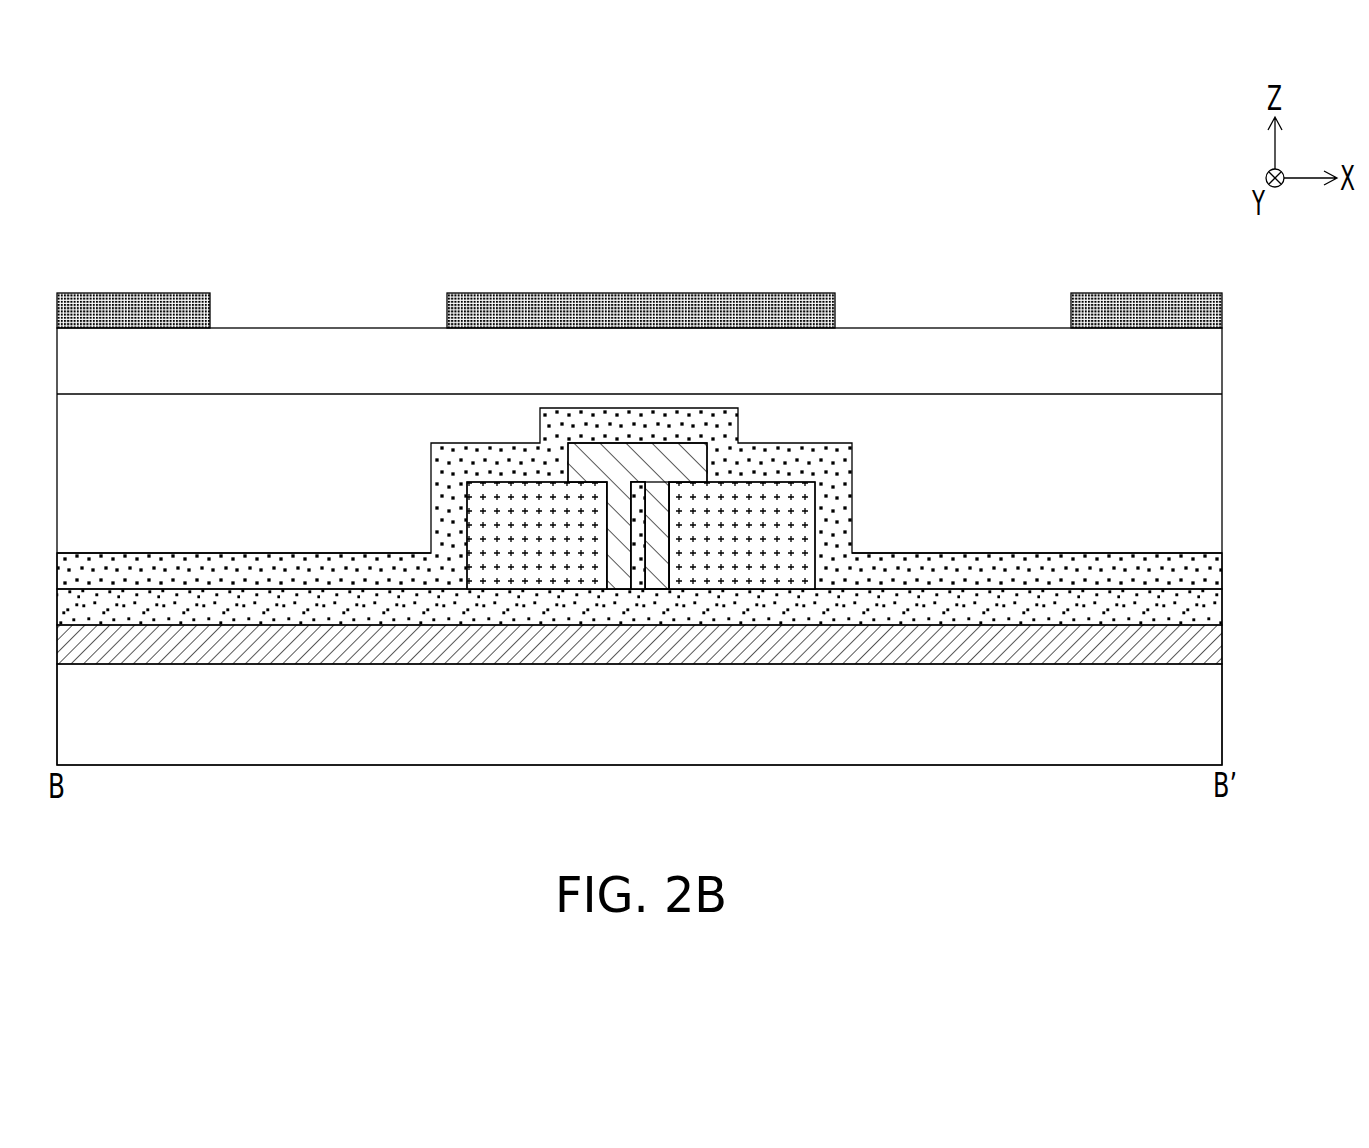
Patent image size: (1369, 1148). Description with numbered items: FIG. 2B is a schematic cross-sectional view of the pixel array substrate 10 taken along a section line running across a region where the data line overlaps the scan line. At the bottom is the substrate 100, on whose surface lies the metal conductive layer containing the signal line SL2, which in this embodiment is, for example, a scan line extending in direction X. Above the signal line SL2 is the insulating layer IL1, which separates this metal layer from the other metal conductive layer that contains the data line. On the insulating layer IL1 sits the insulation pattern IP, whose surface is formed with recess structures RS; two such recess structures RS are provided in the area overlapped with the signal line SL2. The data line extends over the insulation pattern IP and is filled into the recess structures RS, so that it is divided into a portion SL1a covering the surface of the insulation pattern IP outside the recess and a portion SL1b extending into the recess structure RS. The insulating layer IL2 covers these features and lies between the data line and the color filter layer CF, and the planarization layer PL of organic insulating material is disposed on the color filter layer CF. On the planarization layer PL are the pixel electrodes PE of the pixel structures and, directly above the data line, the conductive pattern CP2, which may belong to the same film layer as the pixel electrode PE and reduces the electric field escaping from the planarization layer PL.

The pixel array substrate 10 is at (1334, 841).
The pixel electrode PE is at (118, 300).
The portion of the signal line covering the surface of the insulation pattern SL1a is at (616, 462).
The portion of the signal line extending into the recess structure SL1b is at (660, 513).
The conductive pattern CP2 is at (760, 300).
The planarization layer PL is at (1213, 362).
The color filter layer CF is at (1213, 470).
The insulating layer IL2 is at (1213, 573).
The insulating layer IL1 is at (1213, 609).
The signal line SL2 is at (1213, 645).
The substrate 100 is at (1213, 713).
The recess structure RS is at (669, 547).
The insulation pattern IP is at (752, 570).